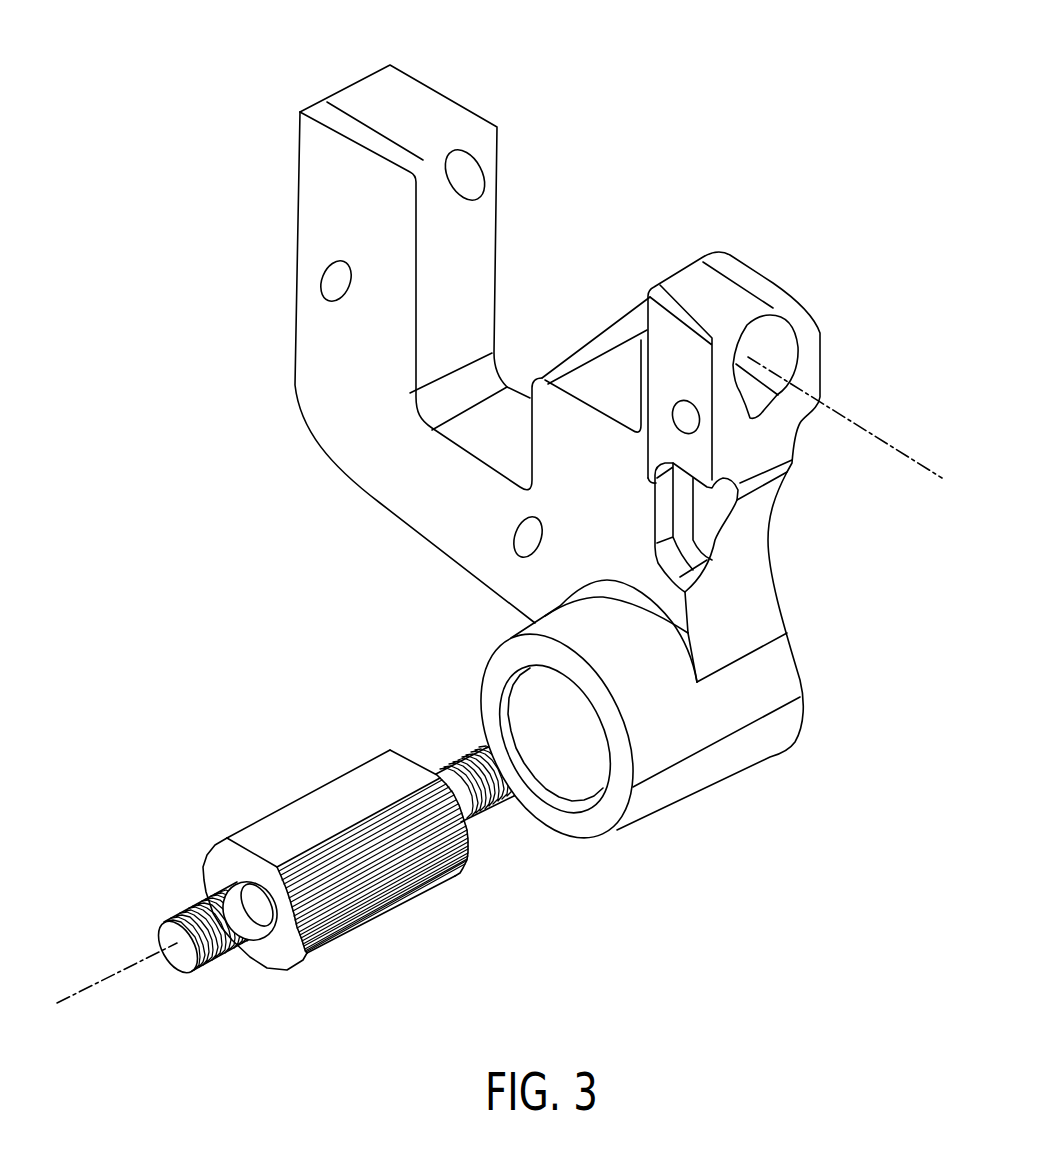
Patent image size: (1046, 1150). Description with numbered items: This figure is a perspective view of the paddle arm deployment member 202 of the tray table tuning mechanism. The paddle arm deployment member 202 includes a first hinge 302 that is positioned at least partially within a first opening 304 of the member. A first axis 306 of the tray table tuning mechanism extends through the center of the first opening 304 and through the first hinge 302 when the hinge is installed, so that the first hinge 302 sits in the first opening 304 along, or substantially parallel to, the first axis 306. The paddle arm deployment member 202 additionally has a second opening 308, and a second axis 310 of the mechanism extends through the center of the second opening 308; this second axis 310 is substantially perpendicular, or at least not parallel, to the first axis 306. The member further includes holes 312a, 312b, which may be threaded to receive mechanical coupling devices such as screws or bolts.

The paddle arm deployment member 202 is at (212, 80).
The first hinge 302 is at (318, 800).
The first opening 304 is at (592, 753).
The first axis 306 is at (108, 977).
The second opening 308 is at (783, 357).
The second axis 310 is at (897, 450).
The hole 312a is at (337, 283).
The hole 312b is at (528, 538).